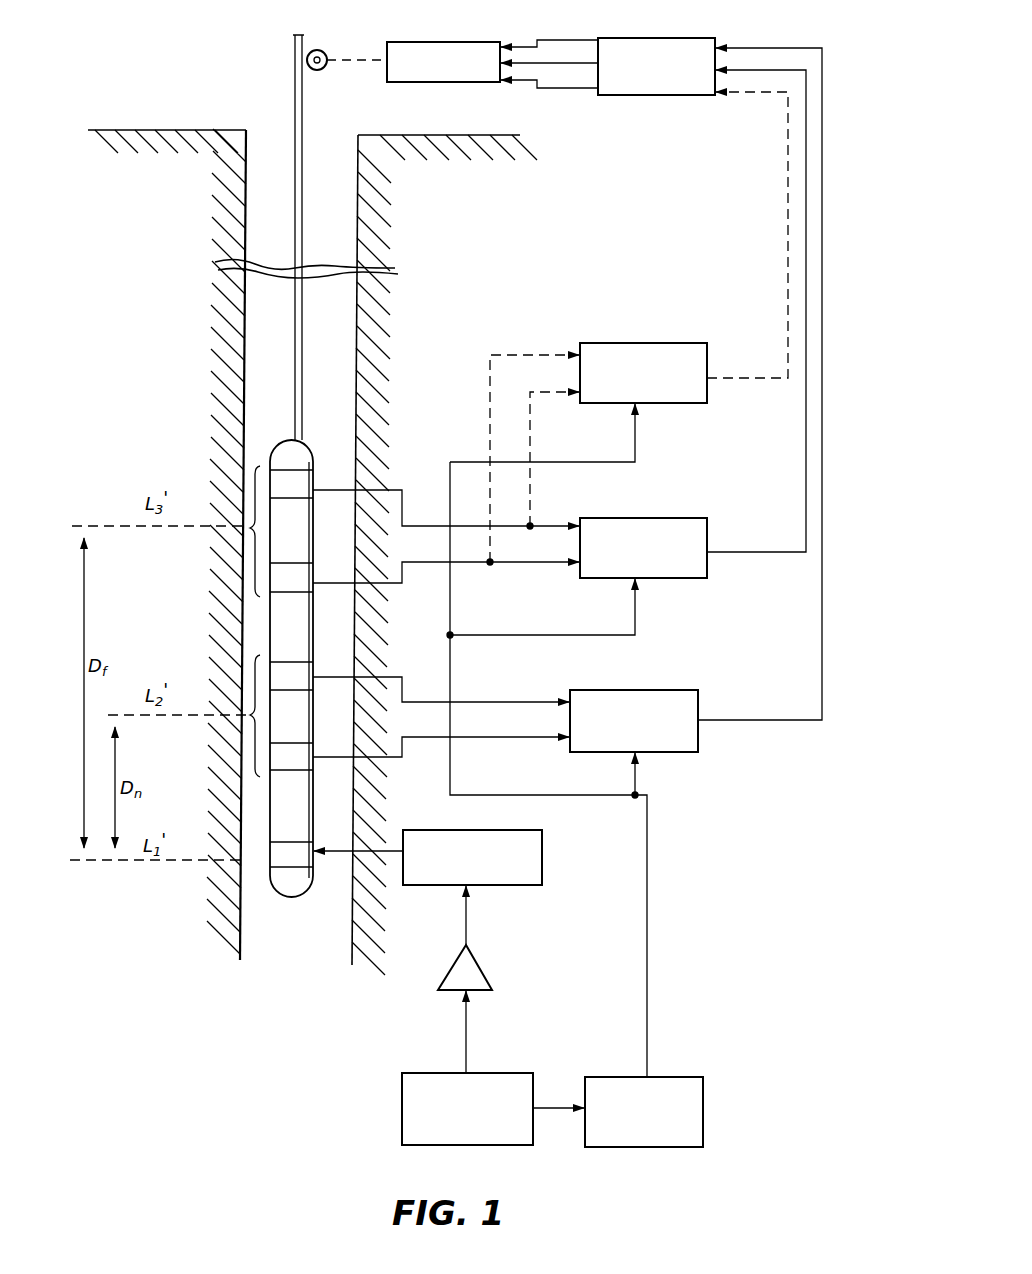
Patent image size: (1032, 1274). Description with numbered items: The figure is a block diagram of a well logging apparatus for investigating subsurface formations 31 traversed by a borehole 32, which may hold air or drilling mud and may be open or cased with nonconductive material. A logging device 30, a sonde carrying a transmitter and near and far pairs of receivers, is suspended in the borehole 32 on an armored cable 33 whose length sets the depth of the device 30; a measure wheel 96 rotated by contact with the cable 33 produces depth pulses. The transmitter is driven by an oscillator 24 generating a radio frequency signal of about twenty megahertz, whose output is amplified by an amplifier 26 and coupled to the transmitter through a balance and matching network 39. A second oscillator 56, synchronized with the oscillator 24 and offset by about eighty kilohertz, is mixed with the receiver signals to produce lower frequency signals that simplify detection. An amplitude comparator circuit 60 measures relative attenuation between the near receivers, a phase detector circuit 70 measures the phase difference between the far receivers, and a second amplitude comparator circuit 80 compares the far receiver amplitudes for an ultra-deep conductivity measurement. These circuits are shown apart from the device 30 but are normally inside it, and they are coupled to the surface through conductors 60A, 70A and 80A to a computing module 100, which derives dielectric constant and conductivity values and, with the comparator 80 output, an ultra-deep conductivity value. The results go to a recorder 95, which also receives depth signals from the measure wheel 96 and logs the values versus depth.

The oscillator 24 is at (520, 1074).
The amplifier 26 is at (480, 967).
The logging device 30 is at (270, 442).
The subsurface formations 31 is at (203, 143).
The borehole 32 is at (268, 152).
The armored cable 33 is at (305, 128).
The balance and matching network 39 is at (513, 831).
The oscillator 56 is at (708, 1077).
The amplitude comparator circuit 60 is at (690, 690).
The conductor 60A is at (715, 722).
The phase detector circuit 70 is at (690, 524).
The conductor 70A is at (728, 552).
The second amplitude comparator circuit 80 is at (700, 349).
The conductor 80A is at (729, 382).
The recorder 95 is at (421, 42).
The measure wheel 96 is at (323, 53).
The computing module 100 is at (626, 38).